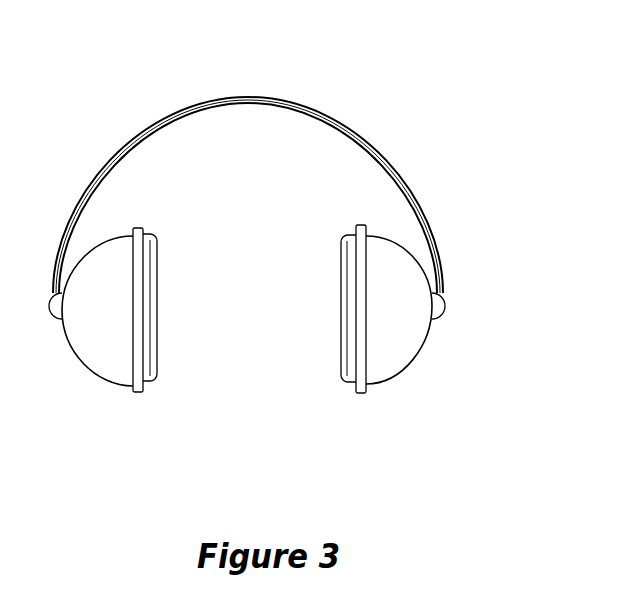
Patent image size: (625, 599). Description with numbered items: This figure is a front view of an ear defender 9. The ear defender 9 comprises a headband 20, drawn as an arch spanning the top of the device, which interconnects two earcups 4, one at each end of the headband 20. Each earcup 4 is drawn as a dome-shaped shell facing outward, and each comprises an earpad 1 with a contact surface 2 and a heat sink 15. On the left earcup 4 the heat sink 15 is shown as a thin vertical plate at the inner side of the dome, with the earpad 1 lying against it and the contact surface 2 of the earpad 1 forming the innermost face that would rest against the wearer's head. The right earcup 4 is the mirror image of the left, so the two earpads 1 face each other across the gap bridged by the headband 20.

The earpad 1 is at (147, 367).
The contact surface 2 is at (157, 300).
The earcup 4 is at (107, 340).
The ear defender 9 is at (467, 148).
The heat sink 15 is at (138, 228).
The headband 20 is at (326, 110).